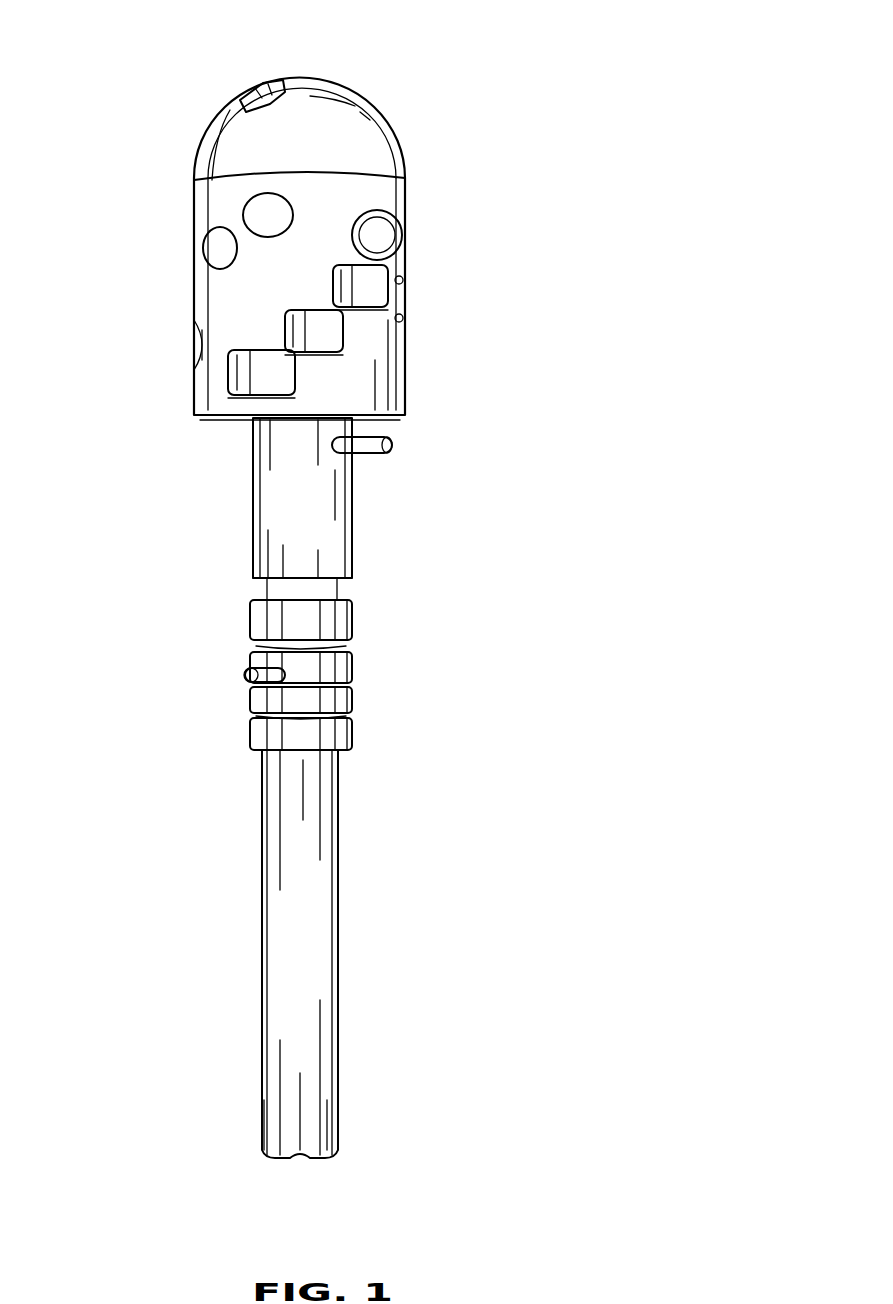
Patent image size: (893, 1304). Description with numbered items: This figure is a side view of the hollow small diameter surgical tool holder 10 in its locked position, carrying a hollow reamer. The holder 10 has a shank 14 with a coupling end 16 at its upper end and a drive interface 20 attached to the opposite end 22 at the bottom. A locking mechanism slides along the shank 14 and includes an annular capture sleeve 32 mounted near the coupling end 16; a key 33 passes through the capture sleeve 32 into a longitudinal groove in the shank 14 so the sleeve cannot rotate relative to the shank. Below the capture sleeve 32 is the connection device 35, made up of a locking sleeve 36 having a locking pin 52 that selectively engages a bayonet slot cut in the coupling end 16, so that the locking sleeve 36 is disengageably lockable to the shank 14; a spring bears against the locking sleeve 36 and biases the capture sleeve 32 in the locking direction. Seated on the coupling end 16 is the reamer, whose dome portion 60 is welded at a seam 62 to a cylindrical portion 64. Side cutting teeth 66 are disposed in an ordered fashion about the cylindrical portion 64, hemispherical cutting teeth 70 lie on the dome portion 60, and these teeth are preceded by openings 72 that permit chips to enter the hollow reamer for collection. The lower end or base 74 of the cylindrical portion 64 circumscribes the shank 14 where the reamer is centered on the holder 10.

The surgical tool holder 10 is at (291, 509).
The shank 14 is at (282, 930).
The coupling end 16 is at (252, 452).
The drive interface 20 is at (326, 1110).
The opposite end 22 is at (260, 1113).
The capture sleeve 32 is at (268, 513).
The key 33 is at (393, 445).
The connection device 35 is at (368, 675).
The locking sleeve 36 is at (373, 613).
The locking pin 52 is at (245, 675).
The dome portion 60 is at (372, 125).
The seam 62 is at (197, 172).
The cylindrical portion 64 is at (338, 200).
The side cutting teeth 66 is at (386, 270).
The hemispherical cutting teeth 70 is at (255, 92).
The openings 72 is at (281, 78).
The base 74 is at (380, 387).